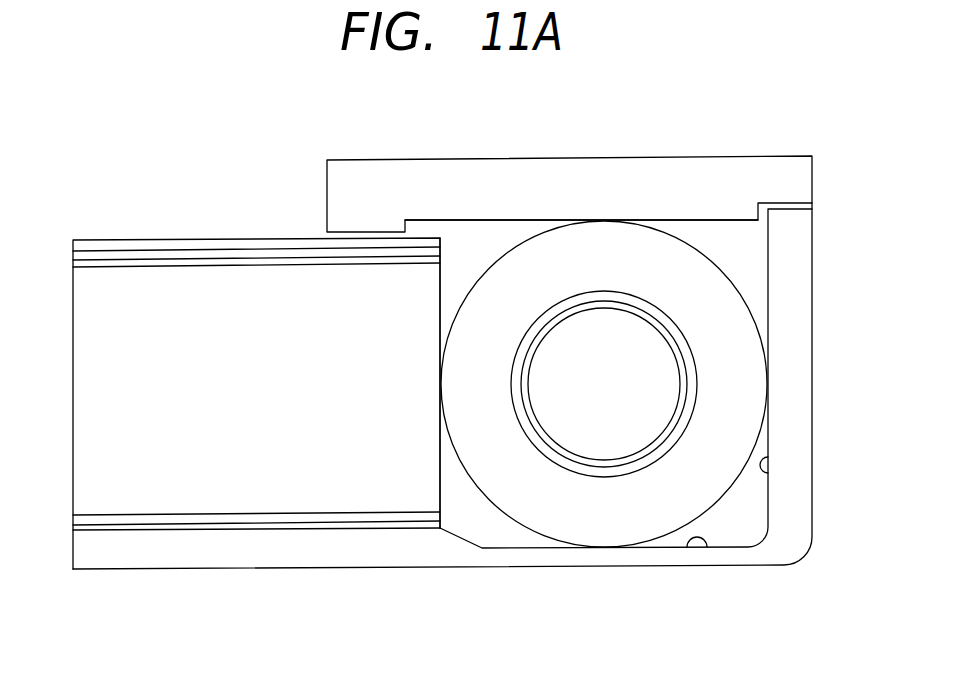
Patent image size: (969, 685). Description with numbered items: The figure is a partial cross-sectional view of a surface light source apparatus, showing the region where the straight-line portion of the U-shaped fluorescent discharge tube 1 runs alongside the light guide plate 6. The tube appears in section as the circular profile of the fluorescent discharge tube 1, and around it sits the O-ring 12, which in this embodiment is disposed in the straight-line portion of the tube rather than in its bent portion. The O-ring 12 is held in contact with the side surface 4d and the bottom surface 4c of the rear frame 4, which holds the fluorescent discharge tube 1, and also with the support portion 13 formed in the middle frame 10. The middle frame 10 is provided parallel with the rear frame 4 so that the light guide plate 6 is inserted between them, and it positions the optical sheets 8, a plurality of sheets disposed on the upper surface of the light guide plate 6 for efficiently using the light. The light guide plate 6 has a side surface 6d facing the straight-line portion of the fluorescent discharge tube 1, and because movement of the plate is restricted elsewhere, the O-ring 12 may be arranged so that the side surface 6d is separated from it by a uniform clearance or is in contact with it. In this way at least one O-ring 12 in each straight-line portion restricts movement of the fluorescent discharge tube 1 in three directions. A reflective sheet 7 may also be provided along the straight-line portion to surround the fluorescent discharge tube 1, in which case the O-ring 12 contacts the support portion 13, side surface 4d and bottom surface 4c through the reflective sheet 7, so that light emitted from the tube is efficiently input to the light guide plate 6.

The fluorescent discharge tube 1 is at (690, 382).
The rear frame 4 is at (803, 310).
The bottom surface 4c is at (697, 548).
The side surface 4d is at (768, 476).
The light guide plate 6 is at (182, 298).
The side surface 6d is at (438, 298).
The reflective sheet 7 is at (240, 520).
The optical sheets 8 is at (67, 273).
The middle frame 10 is at (366, 158).
The O-ring 12 is at (638, 238).
The support portion 13 is at (540, 212).